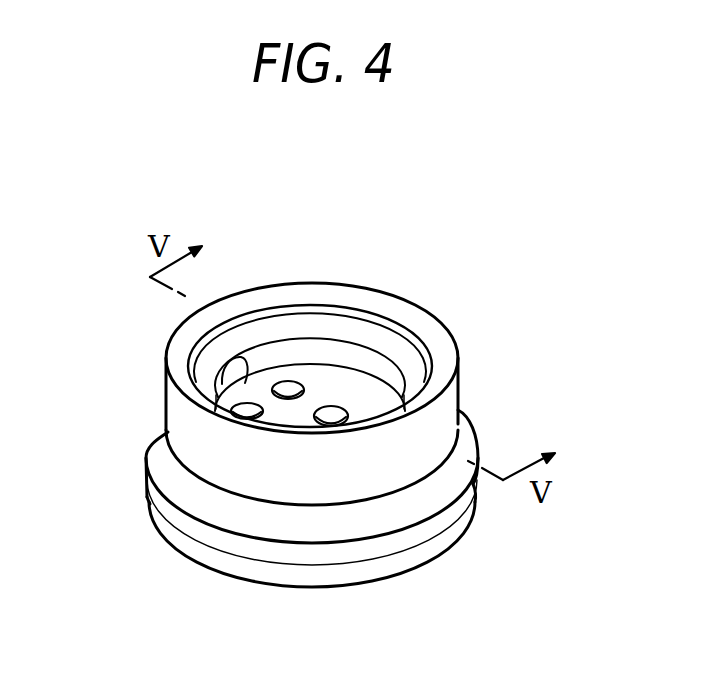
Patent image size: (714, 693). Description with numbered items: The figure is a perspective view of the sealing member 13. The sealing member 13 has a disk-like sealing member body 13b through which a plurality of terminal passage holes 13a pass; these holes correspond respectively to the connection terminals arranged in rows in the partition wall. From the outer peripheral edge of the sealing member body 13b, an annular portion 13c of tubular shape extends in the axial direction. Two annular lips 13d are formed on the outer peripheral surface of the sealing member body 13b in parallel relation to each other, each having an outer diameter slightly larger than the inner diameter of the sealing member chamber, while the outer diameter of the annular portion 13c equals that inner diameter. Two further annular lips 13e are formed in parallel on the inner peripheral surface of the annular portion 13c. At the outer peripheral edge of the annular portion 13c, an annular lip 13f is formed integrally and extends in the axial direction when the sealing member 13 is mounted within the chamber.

The sealing member 13 is at (415, 324).
The terminal passage holes 13a is at (331, 414).
The sealing member body 13b is at (403, 572).
The annular portion 13c is at (460, 387).
The annular lips 13d is at (187, 509).
The annular lips 13e is at (240, 378).
The annular lip 13f is at (244, 297).